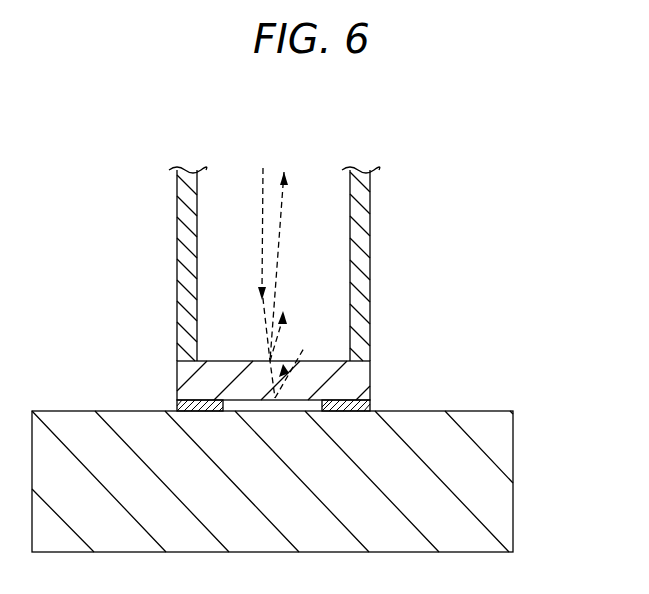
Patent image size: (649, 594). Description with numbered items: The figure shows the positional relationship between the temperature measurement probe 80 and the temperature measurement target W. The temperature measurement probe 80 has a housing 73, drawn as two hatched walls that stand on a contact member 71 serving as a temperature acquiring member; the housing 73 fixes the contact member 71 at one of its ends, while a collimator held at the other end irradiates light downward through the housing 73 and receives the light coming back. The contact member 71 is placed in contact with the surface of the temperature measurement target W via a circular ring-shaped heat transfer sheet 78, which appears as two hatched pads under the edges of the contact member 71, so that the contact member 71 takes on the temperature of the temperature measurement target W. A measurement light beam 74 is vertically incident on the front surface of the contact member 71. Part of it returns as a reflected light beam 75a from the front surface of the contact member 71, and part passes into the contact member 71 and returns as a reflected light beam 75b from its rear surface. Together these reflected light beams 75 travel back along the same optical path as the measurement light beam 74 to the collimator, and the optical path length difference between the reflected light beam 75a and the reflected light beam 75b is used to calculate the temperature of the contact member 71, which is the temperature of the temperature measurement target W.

The temperature measurement probe 80 is at (412, 150).
The housing 73 is at (370, 219).
The contact member 71 is at (177, 378).
The heat transfer sheet 78 is at (372, 404).
The measurement light beam 74 is at (260, 207).
The reflected light beams 75 is at (285, 238).
The reflected light beam from the front surface 75a is at (279, 330).
The reflected light beam from the rear surface 75b is at (311, 367).
The temperature measurement target W is at (513, 472).